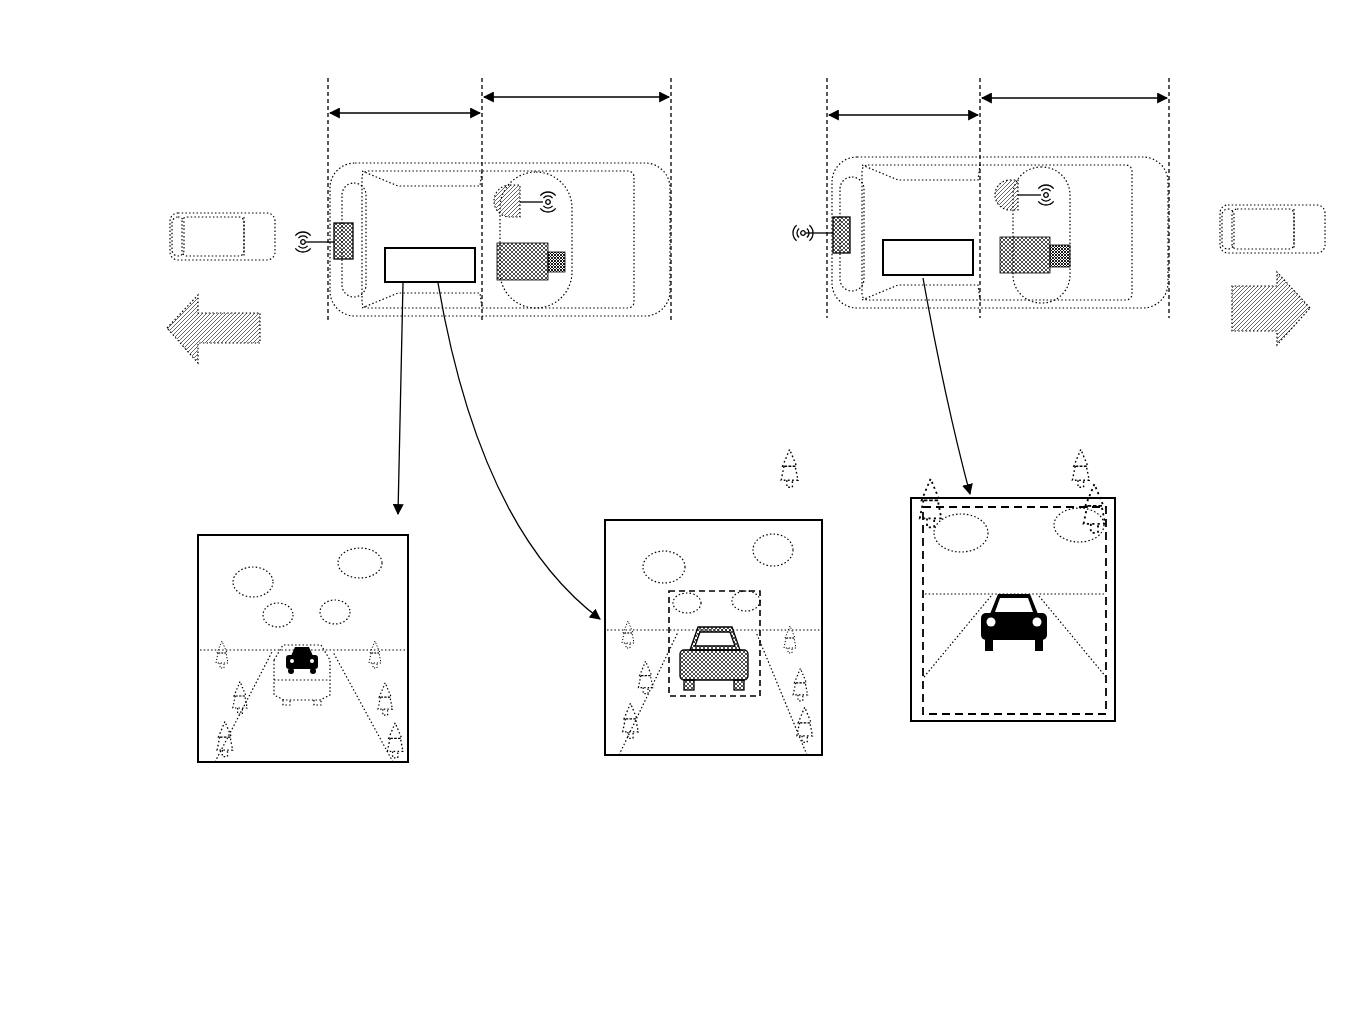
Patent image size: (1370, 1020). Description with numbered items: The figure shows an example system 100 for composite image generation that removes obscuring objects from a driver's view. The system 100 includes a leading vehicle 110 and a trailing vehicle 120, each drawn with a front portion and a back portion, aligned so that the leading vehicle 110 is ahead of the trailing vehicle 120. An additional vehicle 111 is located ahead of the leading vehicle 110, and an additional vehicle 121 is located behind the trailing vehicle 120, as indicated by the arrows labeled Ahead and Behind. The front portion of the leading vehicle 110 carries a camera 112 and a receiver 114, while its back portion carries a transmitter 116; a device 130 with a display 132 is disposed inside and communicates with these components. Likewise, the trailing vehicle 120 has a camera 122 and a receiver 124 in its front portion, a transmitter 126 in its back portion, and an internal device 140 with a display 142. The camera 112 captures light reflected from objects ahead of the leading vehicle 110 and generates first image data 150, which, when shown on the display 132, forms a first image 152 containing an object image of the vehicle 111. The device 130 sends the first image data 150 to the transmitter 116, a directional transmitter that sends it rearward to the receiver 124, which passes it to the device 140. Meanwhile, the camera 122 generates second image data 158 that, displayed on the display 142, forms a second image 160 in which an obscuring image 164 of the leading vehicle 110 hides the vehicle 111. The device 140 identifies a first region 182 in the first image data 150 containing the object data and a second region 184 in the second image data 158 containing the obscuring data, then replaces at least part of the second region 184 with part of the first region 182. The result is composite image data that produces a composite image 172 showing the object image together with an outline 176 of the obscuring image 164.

The system 100 is at (578, 57).
The leading vehicle 110 is at (872, 310).
The vehicle 111 is at (1272, 208).
The camera 112 is at (1060, 260).
The receiver 114 is at (1022, 187).
The transmitter 116 is at (837, 219).
The trailing vehicle 120 is at (443, 371).
The vehicle 121 is at (248, 217).
The camera 122 is at (557, 270).
The receiver 124 is at (520, 193).
The transmitter 126 is at (335, 225).
The device 130 is at (928, 367).
The display 132 is at (1045, 496).
The device 140 is at (492, 433).
The display 142 is at (789, 519).
The first image data 150 is at (783, 232).
The first image 152 is at (1115, 560).
The second image data 158 is at (530, 280).
The second image 160 is at (760, 756).
The obscuring image 164 is at (732, 628).
The composite image 172 is at (367, 659).
The outline 176 is at (337, 697).
The first region 182 is at (1105, 670).
The second region 184 is at (707, 590).